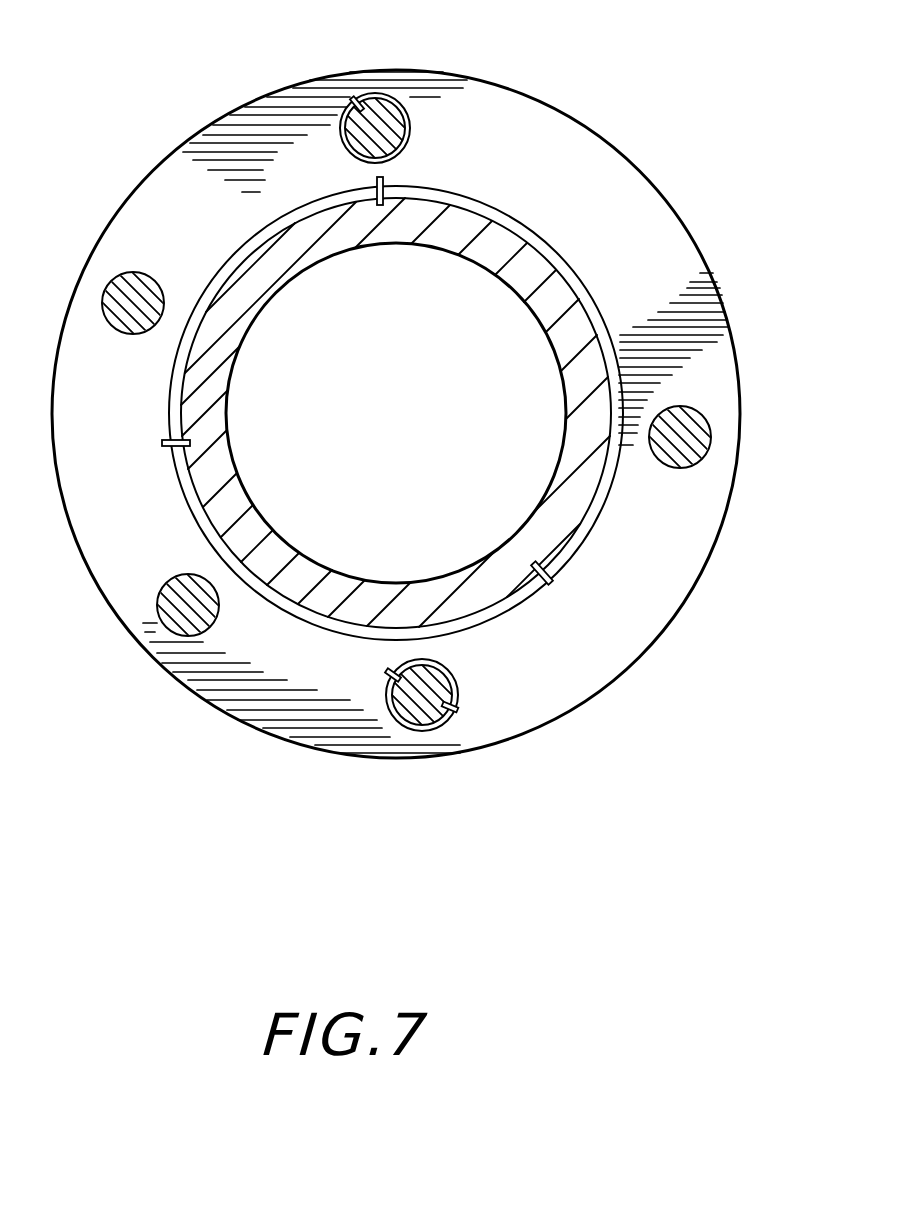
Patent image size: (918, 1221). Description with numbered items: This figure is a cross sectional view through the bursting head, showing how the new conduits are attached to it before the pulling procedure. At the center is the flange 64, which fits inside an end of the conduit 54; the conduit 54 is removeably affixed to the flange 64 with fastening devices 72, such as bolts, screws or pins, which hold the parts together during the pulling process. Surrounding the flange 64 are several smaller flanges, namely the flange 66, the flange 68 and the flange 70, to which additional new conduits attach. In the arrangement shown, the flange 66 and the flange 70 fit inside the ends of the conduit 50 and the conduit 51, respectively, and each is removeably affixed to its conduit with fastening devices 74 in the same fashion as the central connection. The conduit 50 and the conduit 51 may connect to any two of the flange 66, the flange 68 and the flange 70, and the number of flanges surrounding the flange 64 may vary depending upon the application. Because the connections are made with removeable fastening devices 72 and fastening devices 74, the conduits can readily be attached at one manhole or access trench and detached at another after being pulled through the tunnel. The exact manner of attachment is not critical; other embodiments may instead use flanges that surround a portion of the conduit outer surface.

The conduit 50 is at (402, 45).
The conduit 51 is at (422, 748).
The conduit 54 is at (287, 637).
The flange 64 is at (597, 387).
The flange 66 is at (392, 132).
The flange 68 is at (690, 435).
The flange 70 is at (432, 690).
The fastening devices 72 is at (168, 443).
The fastening devices 74 is at (357, 100).